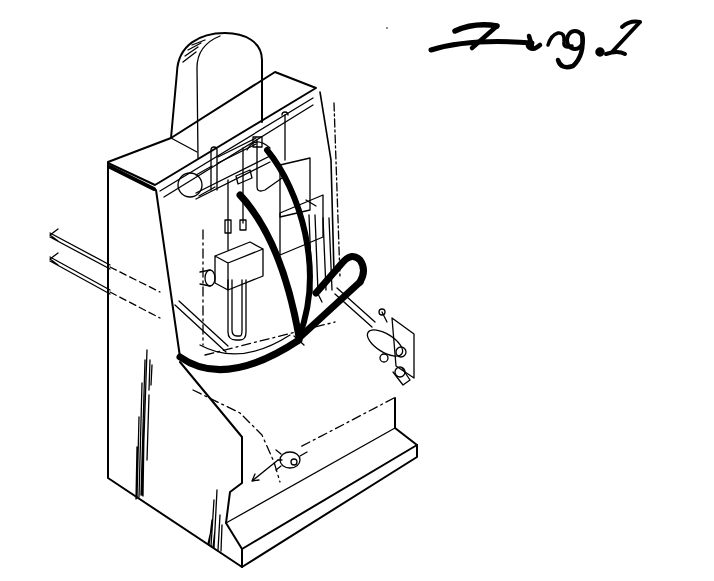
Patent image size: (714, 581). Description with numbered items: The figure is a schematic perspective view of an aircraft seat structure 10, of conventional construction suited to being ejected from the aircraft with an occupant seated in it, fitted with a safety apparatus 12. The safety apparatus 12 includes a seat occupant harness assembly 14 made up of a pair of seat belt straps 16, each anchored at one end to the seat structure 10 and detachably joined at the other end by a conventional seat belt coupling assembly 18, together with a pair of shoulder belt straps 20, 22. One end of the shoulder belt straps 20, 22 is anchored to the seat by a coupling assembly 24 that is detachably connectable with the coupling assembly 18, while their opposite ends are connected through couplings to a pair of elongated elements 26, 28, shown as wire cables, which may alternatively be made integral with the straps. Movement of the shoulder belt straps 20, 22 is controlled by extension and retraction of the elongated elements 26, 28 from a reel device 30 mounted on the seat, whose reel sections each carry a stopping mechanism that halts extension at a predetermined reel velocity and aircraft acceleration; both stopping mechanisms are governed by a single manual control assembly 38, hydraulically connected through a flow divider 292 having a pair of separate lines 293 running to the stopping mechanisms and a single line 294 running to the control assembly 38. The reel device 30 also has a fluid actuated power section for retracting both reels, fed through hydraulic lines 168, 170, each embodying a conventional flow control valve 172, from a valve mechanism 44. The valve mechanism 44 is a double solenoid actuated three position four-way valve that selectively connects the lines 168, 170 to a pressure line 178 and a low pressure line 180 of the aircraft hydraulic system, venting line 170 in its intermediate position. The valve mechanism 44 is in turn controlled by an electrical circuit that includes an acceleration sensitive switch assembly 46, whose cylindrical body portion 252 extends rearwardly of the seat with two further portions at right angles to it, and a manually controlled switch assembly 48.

The seat structure 10 is at (306, 77).
The safety apparatus 12 is at (312, 182).
The seat occupant harness assembly 14 is at (377, 268).
The seat belt straps 16 is at (298, 350).
The seat belt coupling assembly 18 is at (296, 343).
The shoulder belt strap 20 is at (325, 243).
The shoulder belt strap 22 is at (318, 225).
The coupling assembly 24 is at (240, 372).
The elongated element 26 is at (245, 172).
The elongated element 28 is at (286, 122).
The reel device 30 is at (150, 164).
The manual control assembly 38 is at (407, 317).
The valve mechanism 44 is at (205, 262).
The acceleration sensitive switch assembly 46 is at (333, 430).
The manually controlled switch assembly 48 is at (408, 379).
The hydraulic line 168 is at (178, 214).
The hydraulic line 170 is at (175, 226).
The flow control valve 172 is at (234, 316).
The pressure line 178 is at (77, 272).
The low pressure line 180 is at (66, 241).
The cylindrical body portion 252 is at (280, 455).
The flow divider 292 is at (312, 205).
The separate lines 293 is at (332, 153).
The single line 294 is at (350, 257).